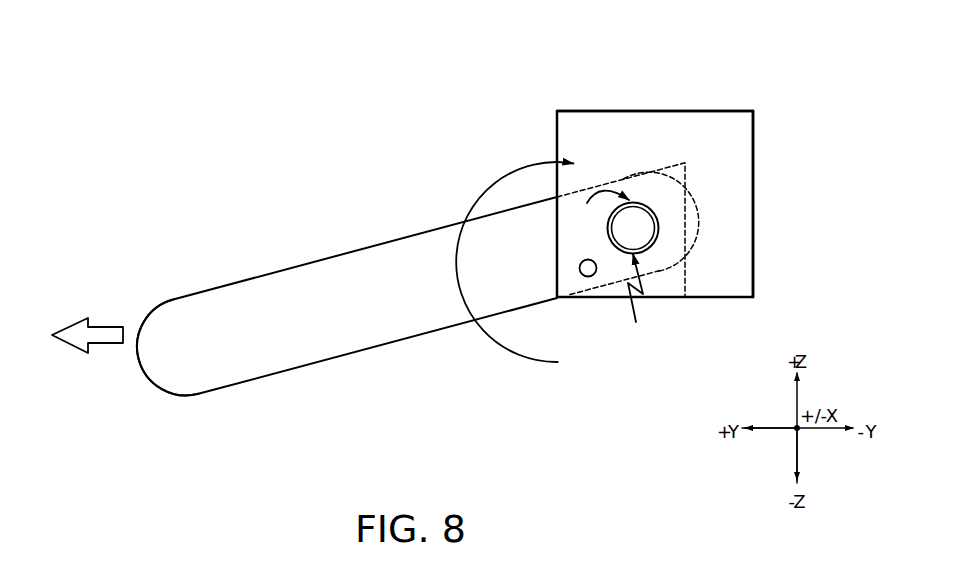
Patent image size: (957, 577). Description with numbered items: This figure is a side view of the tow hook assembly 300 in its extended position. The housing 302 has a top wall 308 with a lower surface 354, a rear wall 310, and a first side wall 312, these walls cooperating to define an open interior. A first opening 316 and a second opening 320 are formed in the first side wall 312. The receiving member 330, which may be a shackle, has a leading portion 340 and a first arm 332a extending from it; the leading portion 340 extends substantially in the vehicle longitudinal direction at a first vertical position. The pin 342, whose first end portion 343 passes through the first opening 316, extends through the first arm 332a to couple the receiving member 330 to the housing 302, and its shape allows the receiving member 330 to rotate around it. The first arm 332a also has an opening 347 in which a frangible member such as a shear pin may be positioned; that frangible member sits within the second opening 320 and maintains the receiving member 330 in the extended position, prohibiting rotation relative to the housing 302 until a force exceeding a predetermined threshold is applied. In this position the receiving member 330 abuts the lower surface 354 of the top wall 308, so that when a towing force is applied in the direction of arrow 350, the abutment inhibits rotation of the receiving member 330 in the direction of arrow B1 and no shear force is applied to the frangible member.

The tow hook assembly 300 is at (297, 168).
The housing 302 is at (722, 104).
The top wall 308 is at (653, 110).
The rear wall 310 is at (753, 170).
The first side wall 312 is at (745, 247).
The first opening 316 is at (593, 212).
The second opening 320 is at (578, 268).
The receiving member 330 is at (403, 288).
The first arm 332a is at (523, 298).
The leading portion 340 is at (147, 378).
The pin 342 is at (646, 303).
The first end portion 343 is at (647, 223).
The opening 347 is at (587, 284).
The arrow 350 is at (107, 327).
The lower surface 354 is at (617, 182).
The arrow B1 is at (493, 192).